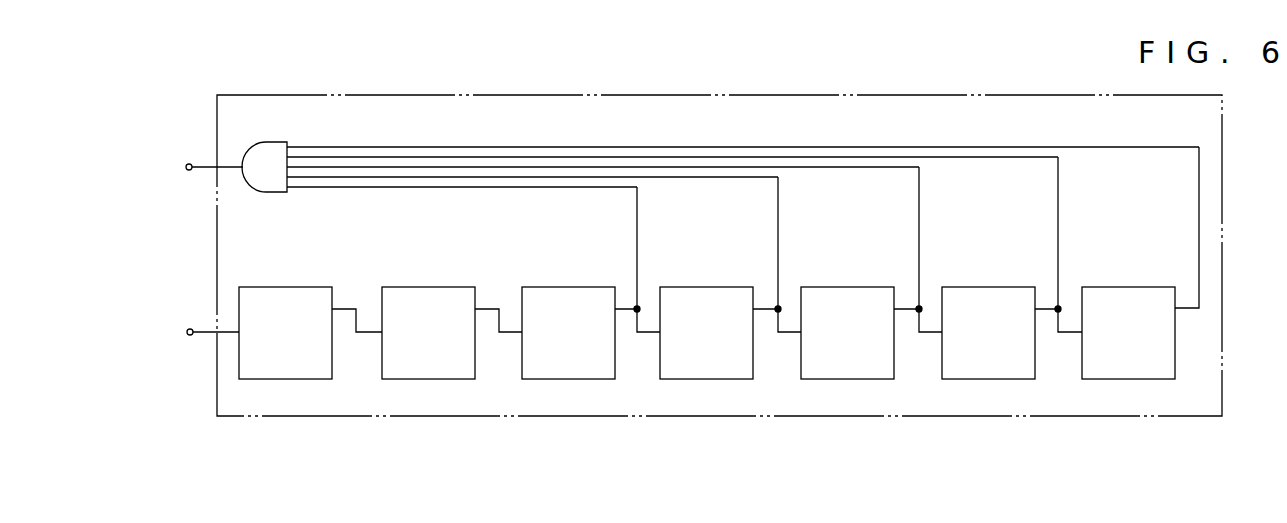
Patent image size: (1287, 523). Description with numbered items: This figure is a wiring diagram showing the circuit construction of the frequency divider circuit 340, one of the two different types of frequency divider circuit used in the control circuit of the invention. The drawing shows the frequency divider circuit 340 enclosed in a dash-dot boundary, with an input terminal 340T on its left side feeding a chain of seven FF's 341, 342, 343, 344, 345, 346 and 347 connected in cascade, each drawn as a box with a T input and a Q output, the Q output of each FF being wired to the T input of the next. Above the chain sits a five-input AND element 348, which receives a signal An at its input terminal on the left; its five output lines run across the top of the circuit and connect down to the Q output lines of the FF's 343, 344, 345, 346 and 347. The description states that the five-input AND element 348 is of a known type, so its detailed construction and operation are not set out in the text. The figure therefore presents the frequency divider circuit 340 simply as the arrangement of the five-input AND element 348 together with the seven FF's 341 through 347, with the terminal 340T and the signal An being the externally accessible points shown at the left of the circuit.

The frequency divider circuit 340 is at (685, 418).
The input terminal 340T is at (189, 329).
The input signal An is at (189, 164).
The FF 341 is at (289, 287).
The FF 342 is at (432, 287).
The FF 343 is at (572, 287).
The FF 344 is at (710, 287).
The FF 345 is at (851, 287).
The FF 346 is at (992, 287).
The FF 347 is at (1132, 287).
The five-input AND element 348 is at (269, 142).